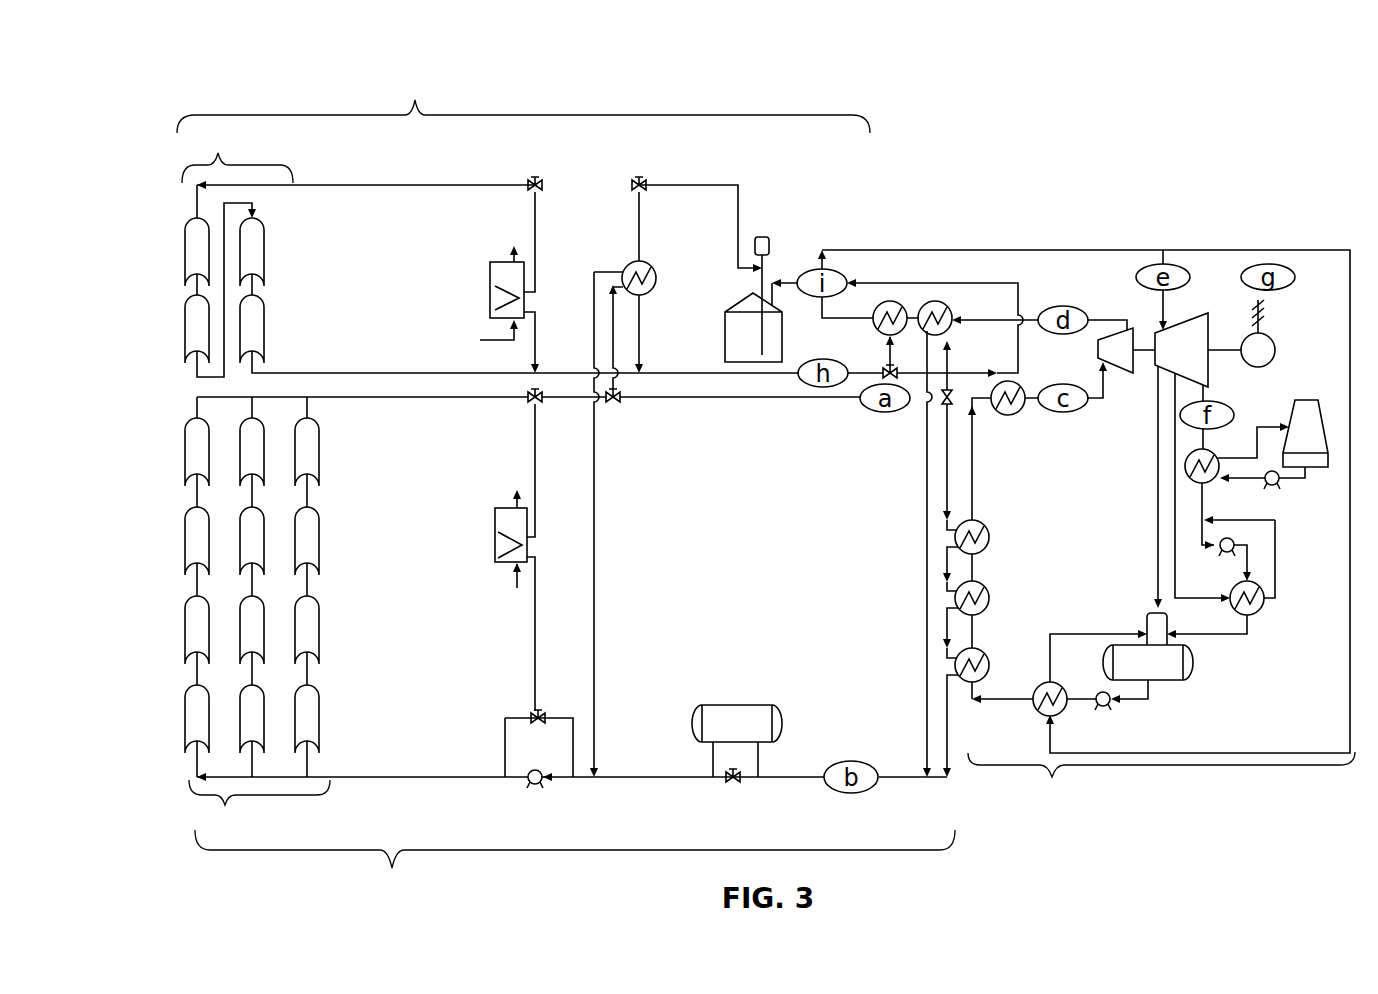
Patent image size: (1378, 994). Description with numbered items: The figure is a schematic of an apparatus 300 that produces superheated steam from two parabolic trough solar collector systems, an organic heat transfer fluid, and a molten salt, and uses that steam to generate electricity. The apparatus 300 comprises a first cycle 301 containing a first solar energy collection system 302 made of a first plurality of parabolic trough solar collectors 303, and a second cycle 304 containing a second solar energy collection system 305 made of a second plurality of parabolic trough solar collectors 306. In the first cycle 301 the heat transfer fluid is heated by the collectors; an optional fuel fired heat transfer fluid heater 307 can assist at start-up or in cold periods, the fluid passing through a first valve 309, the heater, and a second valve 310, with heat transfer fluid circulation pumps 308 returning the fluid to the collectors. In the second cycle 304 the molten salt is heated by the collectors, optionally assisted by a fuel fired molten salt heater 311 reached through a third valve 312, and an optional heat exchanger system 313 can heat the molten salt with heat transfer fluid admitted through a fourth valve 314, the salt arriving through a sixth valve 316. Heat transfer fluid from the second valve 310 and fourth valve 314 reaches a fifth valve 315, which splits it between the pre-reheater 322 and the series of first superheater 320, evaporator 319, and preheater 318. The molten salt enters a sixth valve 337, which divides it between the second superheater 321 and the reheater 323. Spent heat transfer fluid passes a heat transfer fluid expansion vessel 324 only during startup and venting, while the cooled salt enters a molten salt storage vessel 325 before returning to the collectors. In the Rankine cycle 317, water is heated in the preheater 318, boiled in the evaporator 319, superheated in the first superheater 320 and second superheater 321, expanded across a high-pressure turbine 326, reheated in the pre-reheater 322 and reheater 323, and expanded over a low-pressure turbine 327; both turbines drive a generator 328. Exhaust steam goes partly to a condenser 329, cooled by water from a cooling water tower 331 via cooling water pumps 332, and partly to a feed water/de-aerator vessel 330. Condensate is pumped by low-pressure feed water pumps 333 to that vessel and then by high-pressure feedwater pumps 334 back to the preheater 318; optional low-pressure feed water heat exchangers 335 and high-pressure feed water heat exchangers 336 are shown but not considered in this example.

The apparatus 300 is at (222, 85).
The first cycle 301 is at (575, 868).
The first solar energy collection system 302 is at (259, 810).
The first plurality of parabolic trough solar collectors 303 is at (320, 447).
The second cycle 304 is at (523, 102).
The second solar energy collection system 305 is at (237, 153).
The second plurality of parabolic trough solar collectors 306 is at (267, 244).
The fuel fired heat transfer fluid heater 307 is at (495, 545).
The heat transfer fluid circulation pumps 308 is at (530, 790).
The first valve 309 is at (530, 716).
The second valve 310 is at (535, 405).
The fuel fired molten salt heater 311 is at (490, 285).
The third valve 312 is at (533, 178).
The heat exchanger system 313 is at (657, 278).
The fourth valve 314 is at (617, 405).
The fifth valve 315 is at (942, 405).
The sixth valve 316 is at (637, 178).
The Rankine cycle 317 is at (1161, 782).
The preheater 318 is at (989, 667).
The evaporator 319 is at (989, 602).
The first superheater 320 is at (989, 540).
The second superheater 321 is at (1015, 412).
The pre-reheater 322 is at (952, 326).
The reheater 323 is at (882, 302).
The heat transfer fluid expansion vessel 324 is at (740, 705).
The molten salt storage vessel 325 is at (722, 342).
The high-pressure turbine 326 is at (1115, 372).
The low-pressure turbine 327 is at (1210, 322).
The generator 328 is at (1276, 350).
The condenser 329 is at (1210, 480).
The feed water/de-aerator vessel 330 is at (1195, 663).
The cooling water tower 331 is at (1295, 402).
The cooling water pumps 332 is at (1278, 485).
The low-pressure feed water pumps 333 is at (1225, 552).
The high-pressure feedwater pumps 334 is at (1108, 707).
The low-pressure feed water heat exchangers 335 is at (1260, 612).
The high-pressure feed water heat exchangers 336 is at (1040, 710).
The sixth valve 337 is at (886, 367).